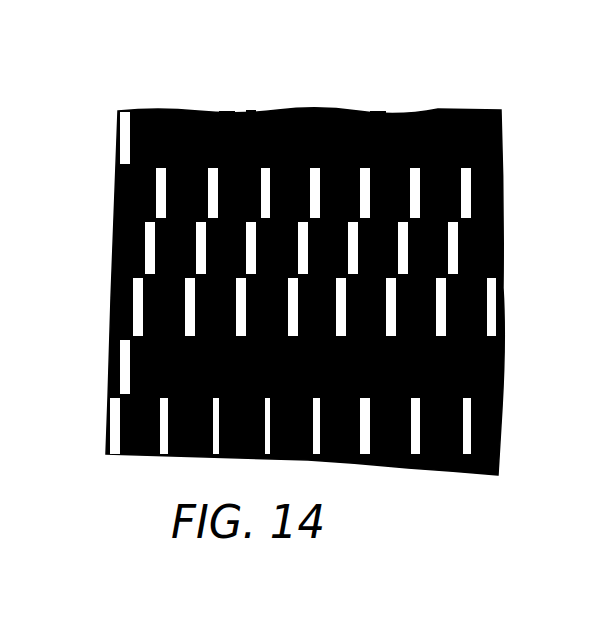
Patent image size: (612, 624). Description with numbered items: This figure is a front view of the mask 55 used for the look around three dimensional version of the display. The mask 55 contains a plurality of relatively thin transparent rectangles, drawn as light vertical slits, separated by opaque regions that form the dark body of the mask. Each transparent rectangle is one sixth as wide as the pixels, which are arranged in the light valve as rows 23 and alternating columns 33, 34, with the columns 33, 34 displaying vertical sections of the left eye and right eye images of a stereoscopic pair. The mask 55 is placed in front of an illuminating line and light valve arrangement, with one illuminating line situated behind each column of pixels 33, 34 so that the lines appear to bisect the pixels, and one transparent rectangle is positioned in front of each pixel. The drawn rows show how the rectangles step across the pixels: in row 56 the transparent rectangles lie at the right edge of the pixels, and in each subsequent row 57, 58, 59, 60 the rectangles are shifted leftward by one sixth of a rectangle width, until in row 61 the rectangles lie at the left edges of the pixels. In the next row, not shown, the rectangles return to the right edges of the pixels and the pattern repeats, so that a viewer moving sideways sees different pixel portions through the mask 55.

The rows of pixels 23 is at (110, 103).
The pixel column 33 is at (220, 102).
The pixel column 34 is at (168, 102).
The mask 55 is at (243, 102).
The row 56 is at (495, 132).
The row 57 is at (495, 190).
The row 58 is at (495, 243).
The row 59 is at (497, 305).
The row 60 is at (496, 358).
The row 61 is at (494, 422).